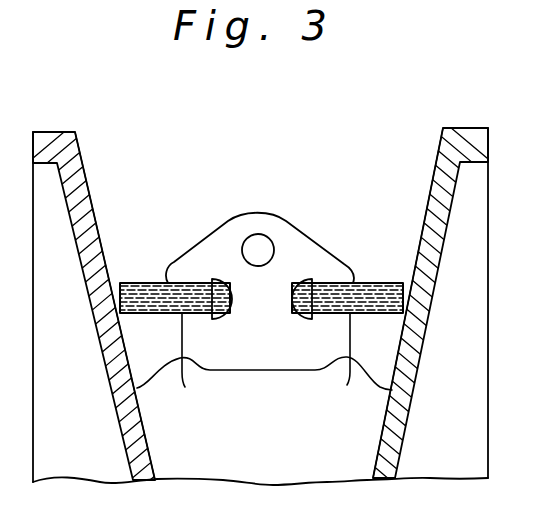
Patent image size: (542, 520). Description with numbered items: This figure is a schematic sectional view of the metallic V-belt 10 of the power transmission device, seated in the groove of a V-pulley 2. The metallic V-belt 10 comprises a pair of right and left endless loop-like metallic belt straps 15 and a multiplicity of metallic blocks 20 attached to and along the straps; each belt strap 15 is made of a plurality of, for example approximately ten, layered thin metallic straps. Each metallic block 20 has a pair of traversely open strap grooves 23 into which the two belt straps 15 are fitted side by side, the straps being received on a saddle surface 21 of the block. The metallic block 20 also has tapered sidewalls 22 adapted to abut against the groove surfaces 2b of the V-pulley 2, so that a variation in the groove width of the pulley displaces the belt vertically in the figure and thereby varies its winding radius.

The V-pulley 2 is at (80, 149).
The groove surface 2b is at (146, 437).
The metallic V-belt 10 is at (265, 254).
The belt strap 15 is at (140, 283).
The metallic block 20 is at (298, 218).
The saddle surface 21 is at (263, 366).
The tapered sidewall 22 is at (107, 345).
The strap groove 23 is at (212, 279).